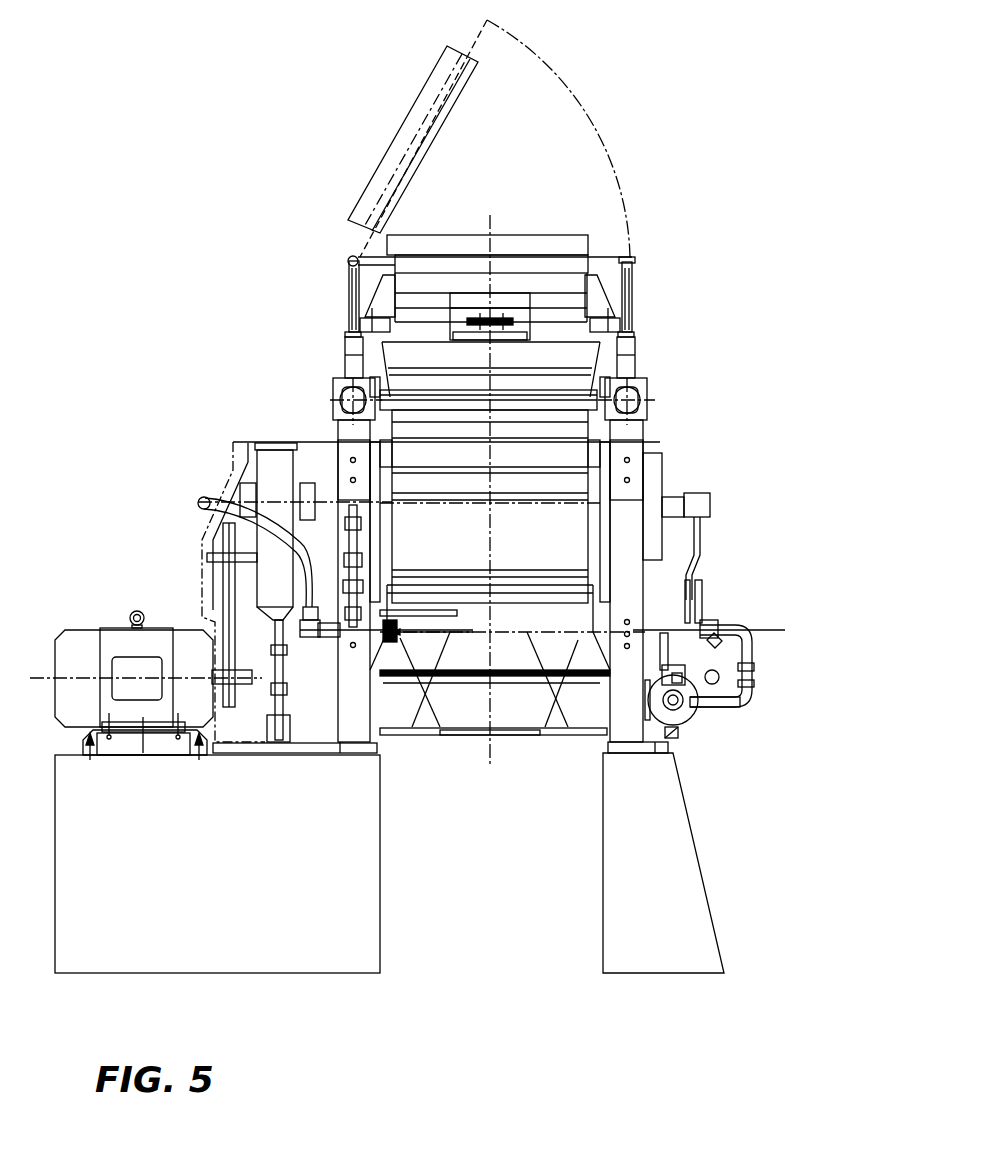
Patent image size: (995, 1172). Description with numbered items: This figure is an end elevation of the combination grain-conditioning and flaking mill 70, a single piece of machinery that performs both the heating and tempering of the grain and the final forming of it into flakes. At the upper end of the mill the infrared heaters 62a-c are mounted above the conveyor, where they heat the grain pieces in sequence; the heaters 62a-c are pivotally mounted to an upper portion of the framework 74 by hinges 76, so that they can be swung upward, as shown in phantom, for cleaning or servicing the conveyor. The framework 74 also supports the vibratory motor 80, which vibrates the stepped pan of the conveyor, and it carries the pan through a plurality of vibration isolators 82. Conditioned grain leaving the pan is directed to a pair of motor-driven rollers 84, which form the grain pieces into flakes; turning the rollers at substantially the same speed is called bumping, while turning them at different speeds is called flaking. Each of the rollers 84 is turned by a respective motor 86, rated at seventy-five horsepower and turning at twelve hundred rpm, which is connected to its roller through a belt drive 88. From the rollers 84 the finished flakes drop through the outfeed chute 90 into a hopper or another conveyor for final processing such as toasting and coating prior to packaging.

The combination grain-conditioning and flaking mill 70 is at (742, 86).
The infrared heaters 62a-c is at (402, 116).
The framework 74 is at (344, 362).
The hinges 76 is at (349, 255).
The vibratory motor 80 is at (472, 338).
The vibration isolators 82 is at (364, 325).
The motor-driven rollers 84 is at (461, 544).
The motors 86 is at (112, 627).
The belt drives 88 is at (212, 611).
The outfeed chute 90 is at (507, 737).